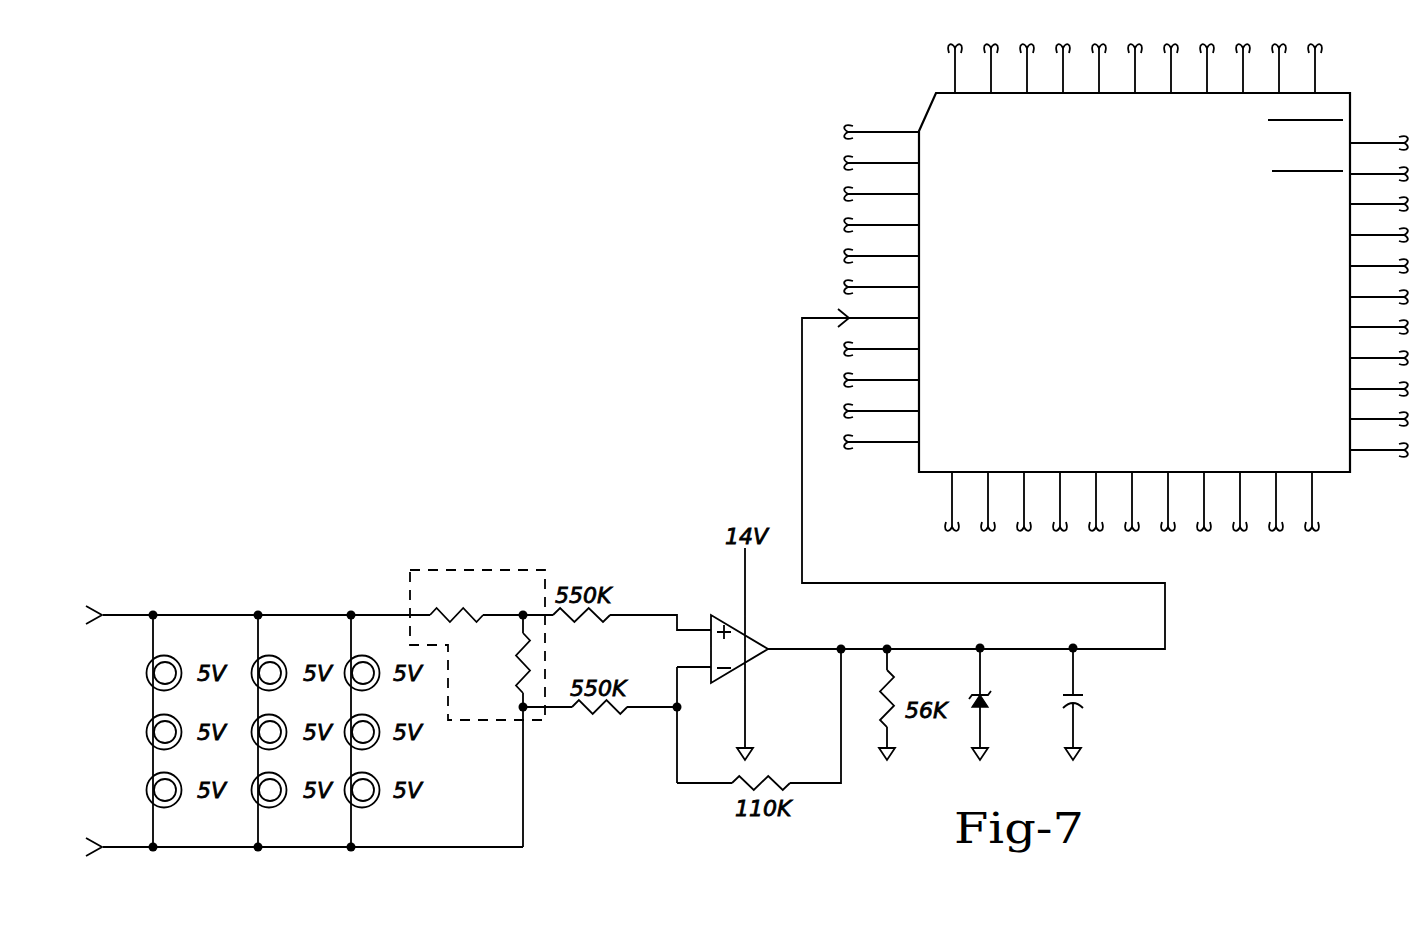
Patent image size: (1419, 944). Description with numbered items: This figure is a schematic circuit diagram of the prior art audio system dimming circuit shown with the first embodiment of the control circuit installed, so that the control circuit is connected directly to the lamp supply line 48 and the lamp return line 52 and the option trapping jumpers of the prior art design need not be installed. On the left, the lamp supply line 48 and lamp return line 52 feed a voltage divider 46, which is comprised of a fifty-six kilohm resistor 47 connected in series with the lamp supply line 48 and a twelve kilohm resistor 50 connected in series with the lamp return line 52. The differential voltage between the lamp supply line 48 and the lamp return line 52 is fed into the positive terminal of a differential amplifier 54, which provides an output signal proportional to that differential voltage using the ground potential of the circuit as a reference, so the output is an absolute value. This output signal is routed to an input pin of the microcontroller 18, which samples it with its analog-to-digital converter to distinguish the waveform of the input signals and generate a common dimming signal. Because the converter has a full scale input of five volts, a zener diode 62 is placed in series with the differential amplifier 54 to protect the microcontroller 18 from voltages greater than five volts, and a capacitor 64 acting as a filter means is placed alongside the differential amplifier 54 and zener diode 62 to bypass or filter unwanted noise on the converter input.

The microcontroller 18 is at (926, 108).
The voltage divider 46 is at (505, 680).
The 56 KΩ resistor 47 is at (440, 622).
The lamp supply line 48 is at (104, 614).
The 12 KΩ resistor 50 is at (528, 640).
The lamp return line 52 is at (105, 848).
The differential amplifier 54 is at (708, 630).
The zener diode 62 is at (982, 668).
The capacitor 64 is at (1075, 670).